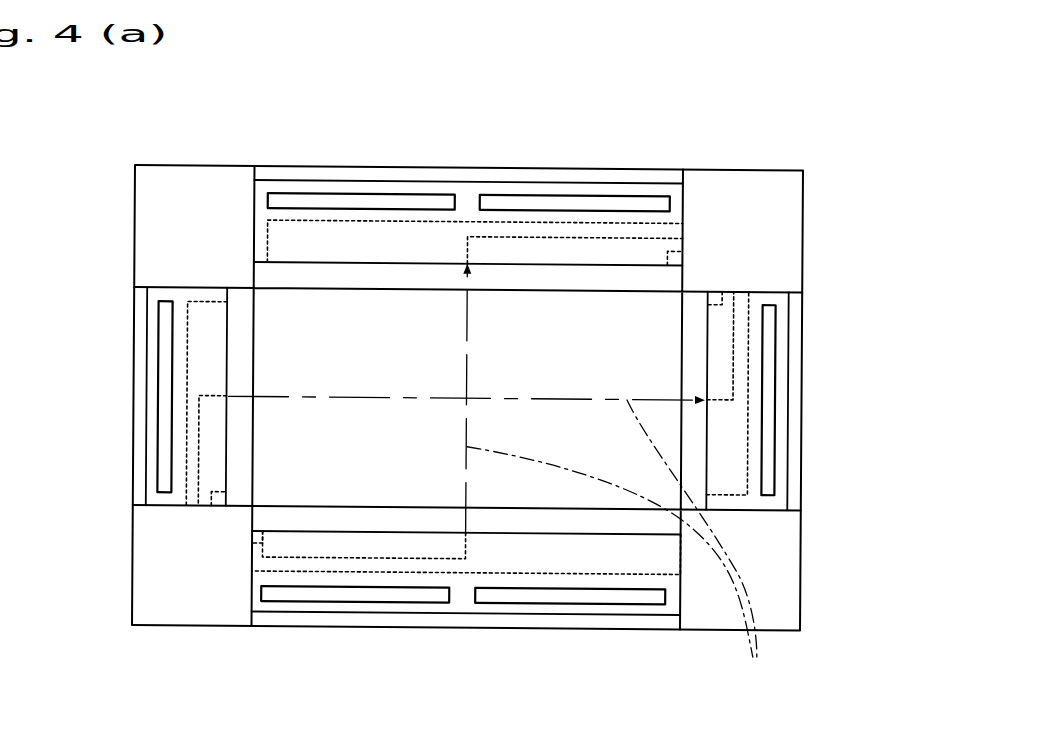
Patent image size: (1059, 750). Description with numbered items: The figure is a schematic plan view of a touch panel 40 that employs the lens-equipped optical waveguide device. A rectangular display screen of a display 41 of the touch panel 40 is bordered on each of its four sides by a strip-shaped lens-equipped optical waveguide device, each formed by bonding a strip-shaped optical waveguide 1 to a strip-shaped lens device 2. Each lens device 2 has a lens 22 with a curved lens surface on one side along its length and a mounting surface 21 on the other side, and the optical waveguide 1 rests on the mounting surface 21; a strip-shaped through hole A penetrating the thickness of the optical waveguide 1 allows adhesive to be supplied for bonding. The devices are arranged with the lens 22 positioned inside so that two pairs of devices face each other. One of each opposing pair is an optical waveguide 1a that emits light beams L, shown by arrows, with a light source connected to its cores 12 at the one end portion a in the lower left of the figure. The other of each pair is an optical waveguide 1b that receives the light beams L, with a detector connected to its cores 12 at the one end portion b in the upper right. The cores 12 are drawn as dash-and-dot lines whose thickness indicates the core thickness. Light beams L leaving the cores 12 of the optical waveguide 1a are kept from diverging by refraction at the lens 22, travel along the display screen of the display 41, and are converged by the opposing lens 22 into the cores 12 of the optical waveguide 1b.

The touch panel 40 is at (167, 159).
The display 41 is at (281, 312).
The optical waveguide 1 is at (470, 399).
The optical waveguide 1a is at (145, 312).
The optical waveguide 1b is at (295, 174).
The core 12 is at (370, 219).
The lens device 2 is at (548, 259).
The mounting surface 21 is at (620, 171).
The lens 22 is at (651, 273).
The through hole A is at (515, 197).
The end portion a is at (253, 566).
The end portion b is at (742, 287).
The light beam L is at (617, 549).